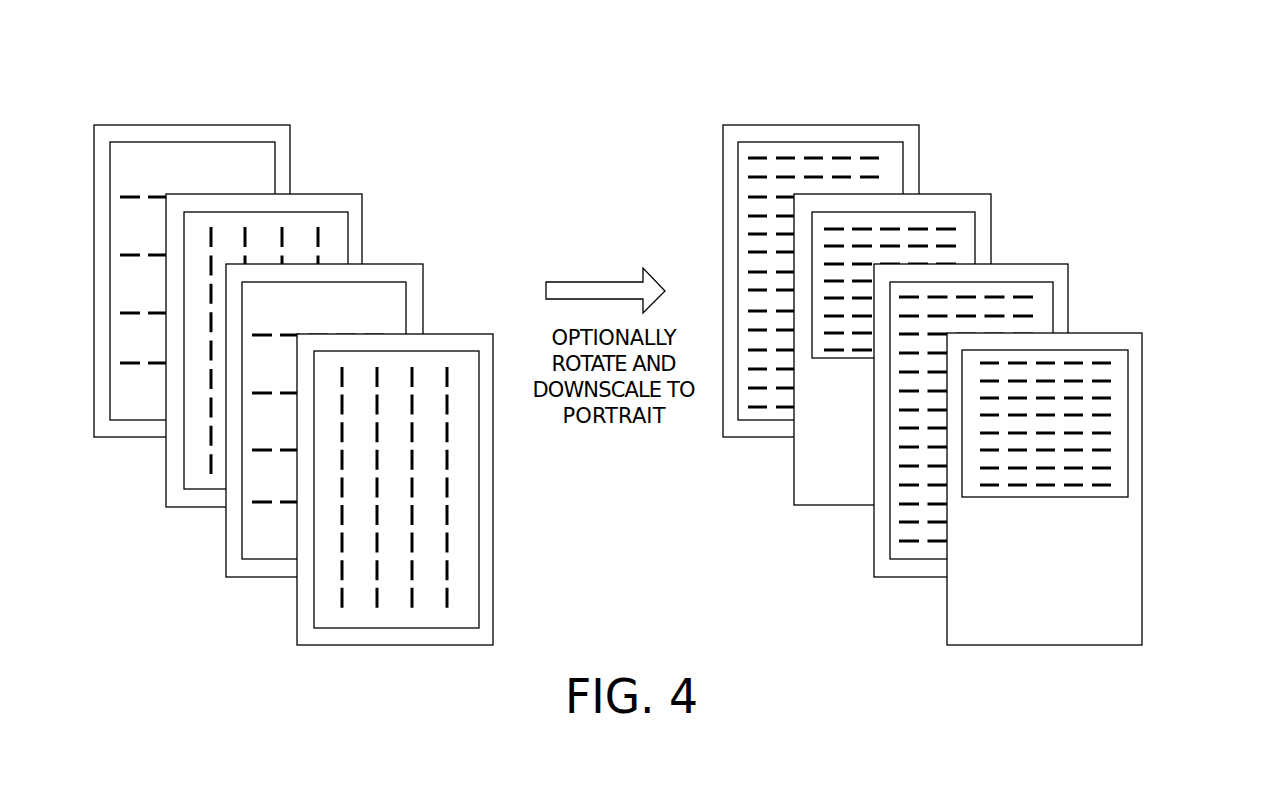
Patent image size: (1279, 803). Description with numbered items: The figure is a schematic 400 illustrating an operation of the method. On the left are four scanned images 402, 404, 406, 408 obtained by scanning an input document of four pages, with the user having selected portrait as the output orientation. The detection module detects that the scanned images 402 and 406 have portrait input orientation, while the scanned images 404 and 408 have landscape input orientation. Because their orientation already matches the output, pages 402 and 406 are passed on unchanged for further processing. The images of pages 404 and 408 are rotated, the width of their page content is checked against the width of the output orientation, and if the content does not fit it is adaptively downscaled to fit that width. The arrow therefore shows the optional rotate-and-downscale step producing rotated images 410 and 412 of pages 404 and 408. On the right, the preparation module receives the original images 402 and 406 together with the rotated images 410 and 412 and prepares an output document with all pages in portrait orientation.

The schematic 400 is at (643, 85).
The scanned image 402 is at (291, 137).
The scanned image 404 is at (327, 194).
The scanned image 406 is at (388, 264).
The scanned image 408 is at (445, 333).
The rotated image 410 is at (952, 193).
The rotated image 412 is at (1100, 332).